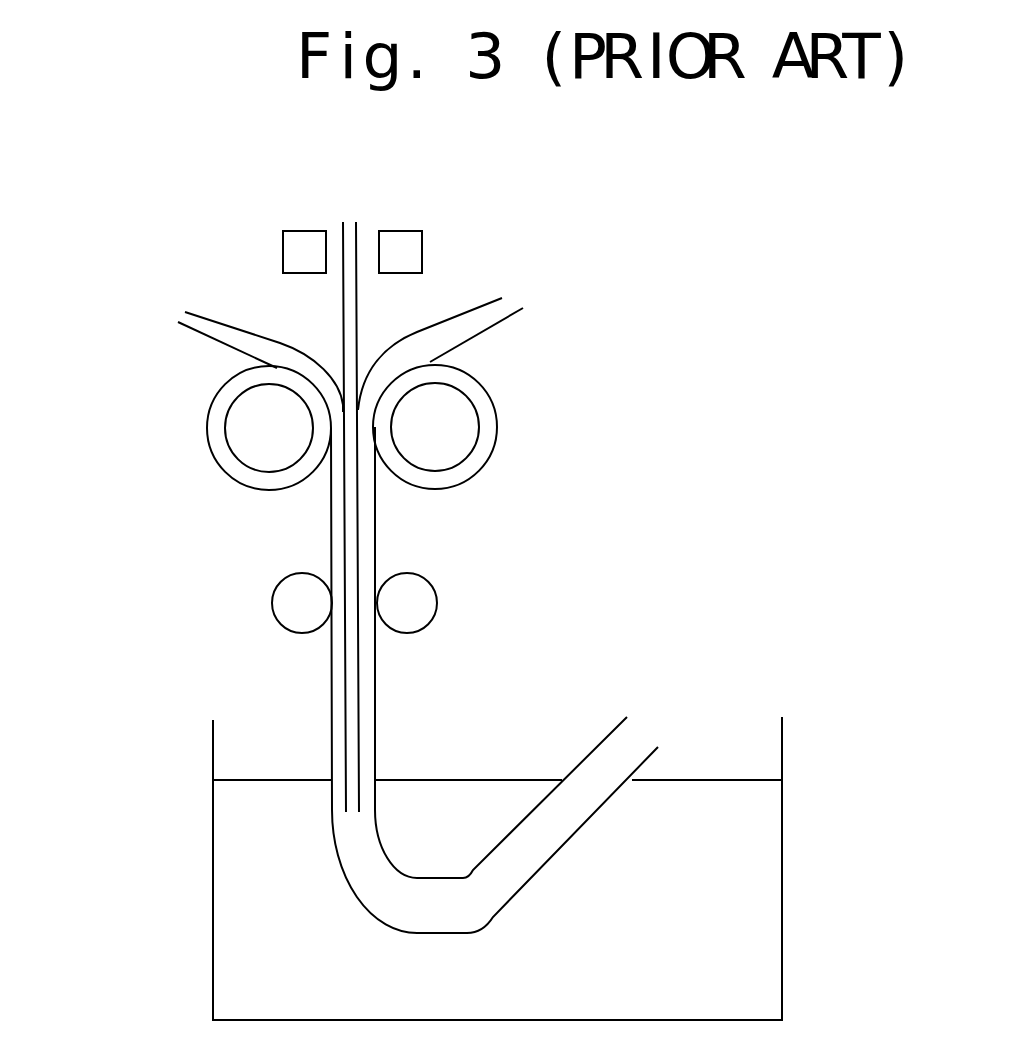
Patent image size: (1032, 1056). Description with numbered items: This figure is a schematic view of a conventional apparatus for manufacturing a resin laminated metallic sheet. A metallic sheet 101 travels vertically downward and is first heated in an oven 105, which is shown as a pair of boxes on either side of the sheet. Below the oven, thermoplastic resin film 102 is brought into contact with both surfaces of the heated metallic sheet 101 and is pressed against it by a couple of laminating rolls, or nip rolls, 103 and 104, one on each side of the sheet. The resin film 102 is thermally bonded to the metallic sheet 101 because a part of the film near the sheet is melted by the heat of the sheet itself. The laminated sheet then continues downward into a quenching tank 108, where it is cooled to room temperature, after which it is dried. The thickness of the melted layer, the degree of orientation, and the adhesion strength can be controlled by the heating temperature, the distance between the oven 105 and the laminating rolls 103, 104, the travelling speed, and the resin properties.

The metallic sheet 101 is at (353, 329).
The thermoplastic resin film 102 is at (195, 321).
The laminating roll 103 is at (247, 432).
The laminating roll 104 is at (455, 427).
The oven 105 is at (310, 242).
The quenching tank 108 is at (497, 868).